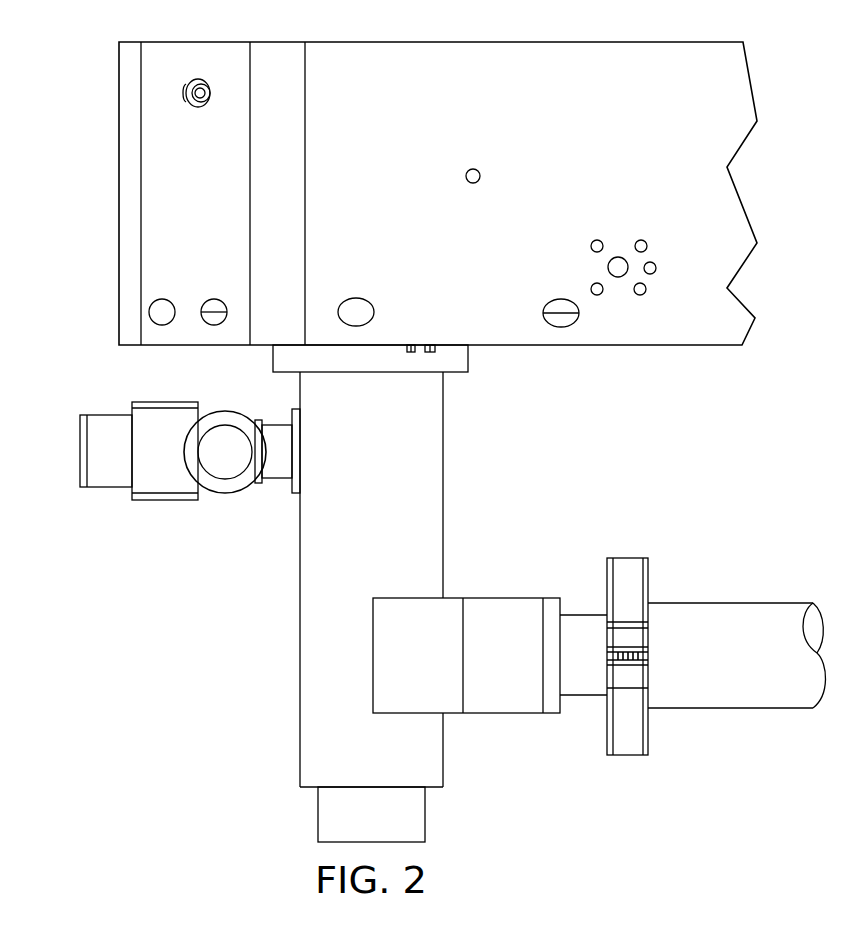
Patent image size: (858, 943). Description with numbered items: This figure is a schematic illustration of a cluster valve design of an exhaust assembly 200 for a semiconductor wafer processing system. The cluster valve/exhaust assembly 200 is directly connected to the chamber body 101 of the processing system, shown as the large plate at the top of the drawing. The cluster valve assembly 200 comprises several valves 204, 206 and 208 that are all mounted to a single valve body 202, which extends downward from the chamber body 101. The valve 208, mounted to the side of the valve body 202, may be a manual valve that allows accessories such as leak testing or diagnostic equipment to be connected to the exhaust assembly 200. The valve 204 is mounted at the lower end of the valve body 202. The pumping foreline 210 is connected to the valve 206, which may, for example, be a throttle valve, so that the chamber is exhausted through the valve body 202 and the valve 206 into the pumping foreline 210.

The chamber body 101 is at (462, 262).
The exhaust assembly 200 is at (453, 593).
The valve body 202 is at (307, 589).
The valve 204 is at (327, 815).
The valve 206 is at (507, 706).
The valve 208 is at (145, 490).
The pumping foreline 210 is at (705, 703).